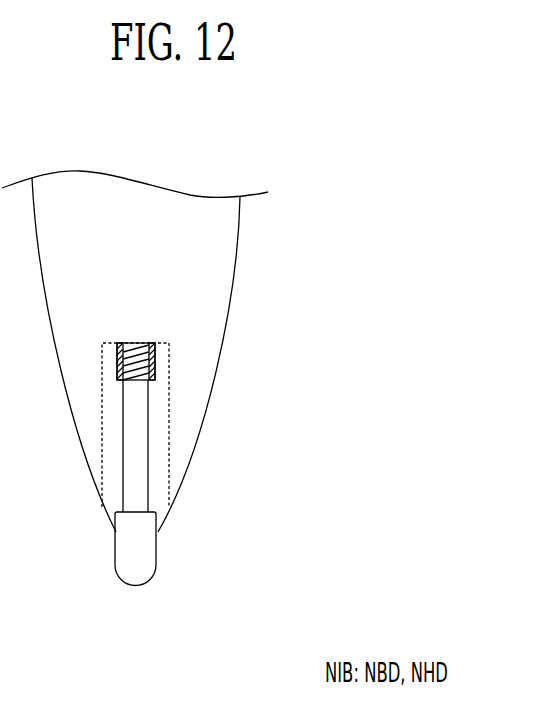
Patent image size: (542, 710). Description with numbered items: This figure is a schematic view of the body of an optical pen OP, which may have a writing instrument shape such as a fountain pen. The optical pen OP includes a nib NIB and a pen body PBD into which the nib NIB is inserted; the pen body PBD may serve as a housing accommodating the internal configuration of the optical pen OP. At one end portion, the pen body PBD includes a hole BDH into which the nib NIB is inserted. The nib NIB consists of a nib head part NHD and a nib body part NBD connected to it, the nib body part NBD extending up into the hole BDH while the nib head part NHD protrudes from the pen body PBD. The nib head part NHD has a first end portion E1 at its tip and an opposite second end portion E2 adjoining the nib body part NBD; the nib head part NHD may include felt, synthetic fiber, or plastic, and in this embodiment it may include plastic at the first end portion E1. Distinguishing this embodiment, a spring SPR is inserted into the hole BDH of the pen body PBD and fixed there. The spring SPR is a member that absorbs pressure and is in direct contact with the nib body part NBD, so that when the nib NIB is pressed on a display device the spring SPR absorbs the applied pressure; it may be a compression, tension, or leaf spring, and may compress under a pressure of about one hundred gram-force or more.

The optical pen OP is at (260, 164).
The pen body PBD is at (236, 269).
The hole BDH is at (170, 408).
The spring SPR is at (156, 349).
The nib NIB is at (158, 512).
The nib body part NBD is at (143, 460).
The nib head part NHD is at (138, 574).
The first end portion E1 is at (123, 585).
The second end portion E2 is at (115, 523).